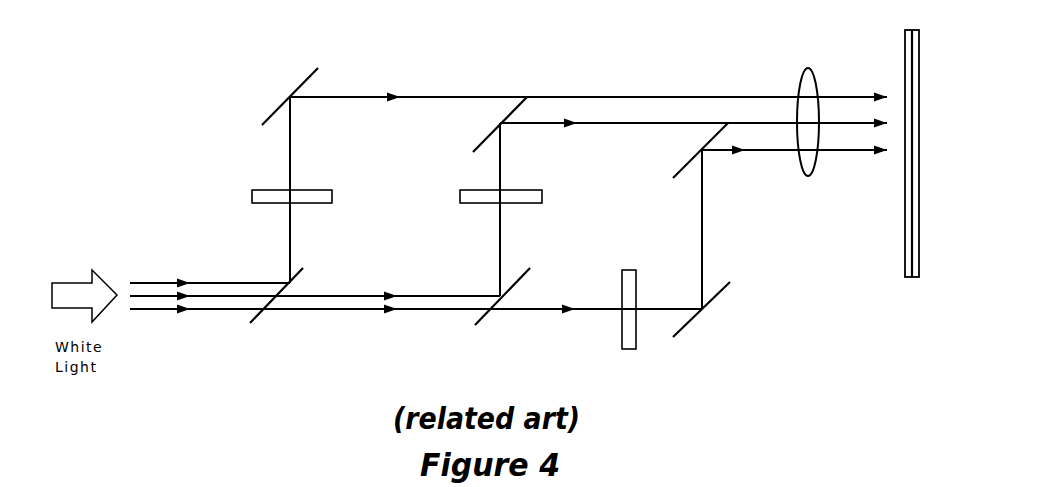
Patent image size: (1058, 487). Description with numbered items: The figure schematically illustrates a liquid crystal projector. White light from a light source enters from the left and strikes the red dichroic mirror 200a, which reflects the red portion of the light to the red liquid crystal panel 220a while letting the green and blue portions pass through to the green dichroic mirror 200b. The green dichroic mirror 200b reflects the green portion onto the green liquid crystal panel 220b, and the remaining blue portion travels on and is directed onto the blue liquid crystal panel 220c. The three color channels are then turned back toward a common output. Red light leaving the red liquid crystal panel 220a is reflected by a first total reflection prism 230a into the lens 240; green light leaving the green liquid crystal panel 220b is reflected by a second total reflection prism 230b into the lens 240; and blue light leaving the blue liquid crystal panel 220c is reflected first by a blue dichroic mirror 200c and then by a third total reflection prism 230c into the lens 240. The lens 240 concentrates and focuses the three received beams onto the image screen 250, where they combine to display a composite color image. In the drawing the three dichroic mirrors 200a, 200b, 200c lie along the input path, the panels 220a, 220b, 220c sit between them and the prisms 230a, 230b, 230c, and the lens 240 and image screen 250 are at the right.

The red dichroic mirror 200a is at (263, 317).
The green dichroic mirror 200b is at (490, 315).
The blue dichroic mirror 200c is at (688, 323).
The red liquid crystal panel 220a is at (252, 193).
The green liquid crystal panel 220b is at (460, 193).
The blue liquid crystal panel 220c is at (628, 269).
The first total reflection prism 230a is at (309, 76).
The second total reflection prism 230b is at (516, 97).
The third total reflection prism 230c is at (712, 140).
The lens 240 is at (799, 78).
The image screen 250 is at (905, 52).